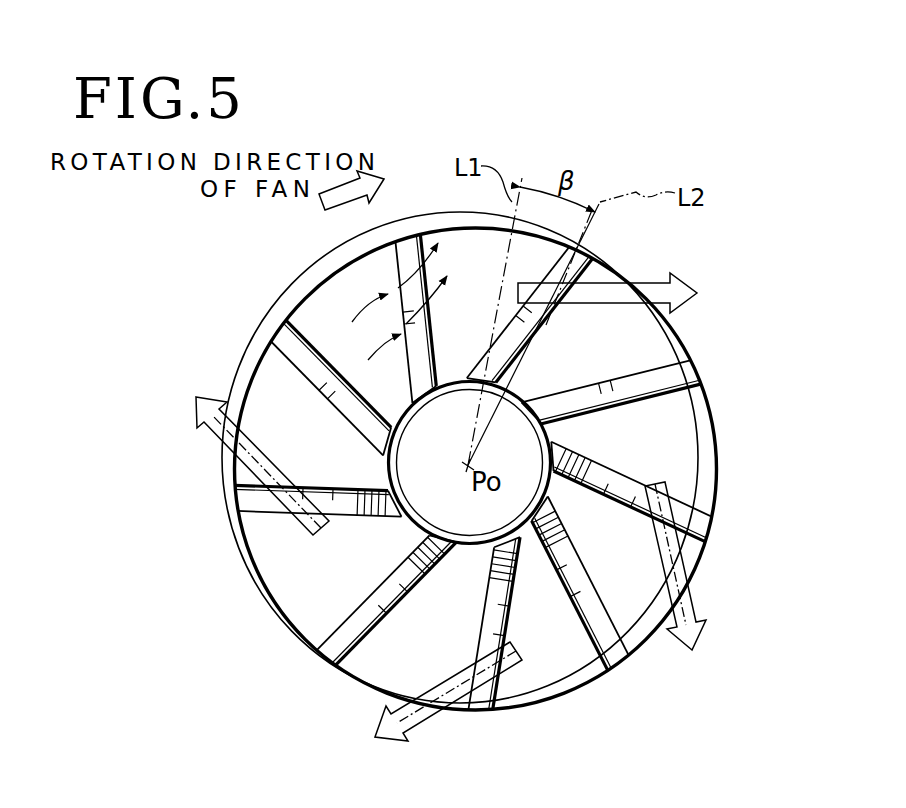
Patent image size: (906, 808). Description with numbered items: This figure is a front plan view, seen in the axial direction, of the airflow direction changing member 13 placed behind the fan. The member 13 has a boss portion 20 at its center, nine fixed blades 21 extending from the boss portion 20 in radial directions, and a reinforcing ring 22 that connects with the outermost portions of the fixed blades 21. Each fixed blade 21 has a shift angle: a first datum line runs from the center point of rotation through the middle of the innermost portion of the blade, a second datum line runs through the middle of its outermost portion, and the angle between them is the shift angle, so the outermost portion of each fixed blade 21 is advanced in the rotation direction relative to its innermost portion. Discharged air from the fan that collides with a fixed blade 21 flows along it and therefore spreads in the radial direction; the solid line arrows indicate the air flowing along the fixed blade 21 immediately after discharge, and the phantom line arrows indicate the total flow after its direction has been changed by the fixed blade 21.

The airflow direction changing member 13 is at (250, 274).
The boss portion 20 is at (403, 529).
The fixed blade 21 is at (292, 356).
The reinforcing ring 22 is at (714, 458).